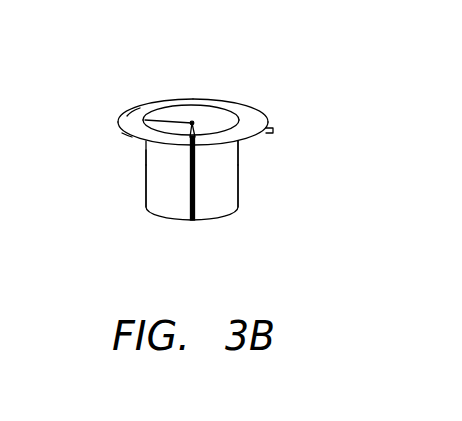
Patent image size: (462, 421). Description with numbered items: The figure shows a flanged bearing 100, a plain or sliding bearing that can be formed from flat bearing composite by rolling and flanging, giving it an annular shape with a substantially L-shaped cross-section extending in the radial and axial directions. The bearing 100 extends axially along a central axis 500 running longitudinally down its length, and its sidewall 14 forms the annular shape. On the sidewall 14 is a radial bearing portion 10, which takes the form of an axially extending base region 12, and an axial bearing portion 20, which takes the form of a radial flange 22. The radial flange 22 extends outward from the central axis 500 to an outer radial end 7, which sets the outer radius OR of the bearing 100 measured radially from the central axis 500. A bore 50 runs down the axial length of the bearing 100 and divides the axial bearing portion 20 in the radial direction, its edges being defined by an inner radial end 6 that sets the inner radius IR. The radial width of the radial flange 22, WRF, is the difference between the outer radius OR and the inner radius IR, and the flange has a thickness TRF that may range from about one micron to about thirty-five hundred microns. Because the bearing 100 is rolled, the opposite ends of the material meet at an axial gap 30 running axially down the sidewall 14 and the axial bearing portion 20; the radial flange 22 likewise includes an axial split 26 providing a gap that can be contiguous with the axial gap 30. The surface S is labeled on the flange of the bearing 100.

The bearing 100 is at (340, 62).
The axial bearing portion 20 is at (246, 105).
The outer radial end 7 is at (118, 122).
The sidewall 14 is at (124, 134).
The outer surface of flange S is at (270, 122).
The bore 50 is at (258, 106).
The inner radius IR is at (192, 123).
The outer radius OR is at (192, 123).
The central axis 500 is at (192, 123).
The radial width of the radial flange WRF is at (127, 116).
The thickness of the radial flange TRF is at (273, 131).
The radial flange 22 is at (128, 134).
The axial split 26 is at (190, 141).
The axially extending base region 12 is at (146, 197).
The axial gap 30 is at (188, 205).
The inner radial end 6 is at (197, 140).
The radial bearing portion 10 is at (238, 197).